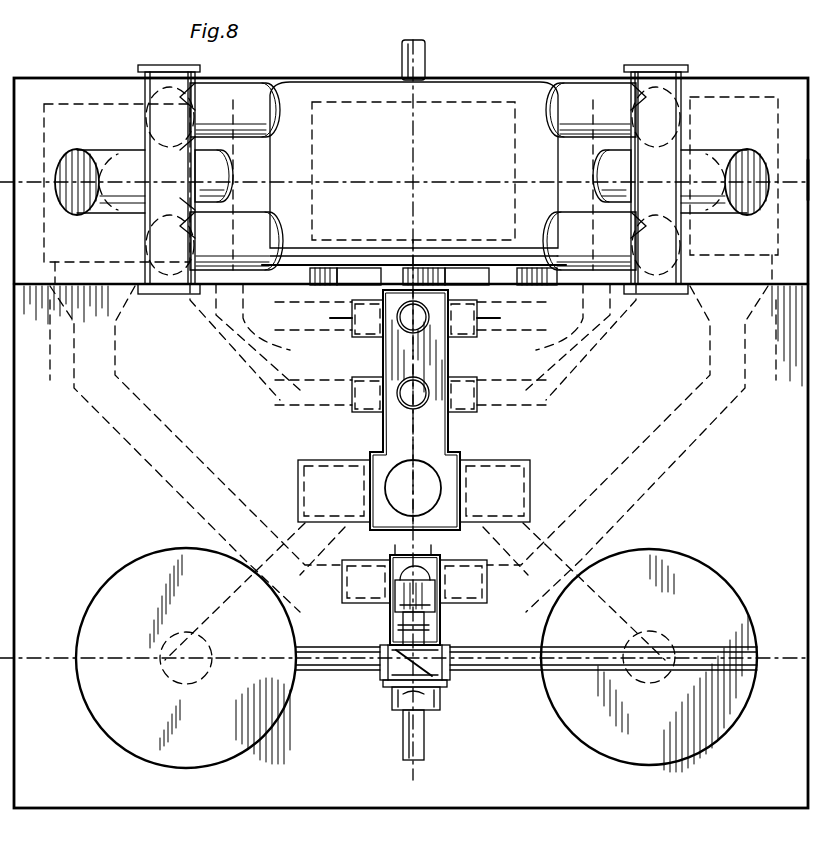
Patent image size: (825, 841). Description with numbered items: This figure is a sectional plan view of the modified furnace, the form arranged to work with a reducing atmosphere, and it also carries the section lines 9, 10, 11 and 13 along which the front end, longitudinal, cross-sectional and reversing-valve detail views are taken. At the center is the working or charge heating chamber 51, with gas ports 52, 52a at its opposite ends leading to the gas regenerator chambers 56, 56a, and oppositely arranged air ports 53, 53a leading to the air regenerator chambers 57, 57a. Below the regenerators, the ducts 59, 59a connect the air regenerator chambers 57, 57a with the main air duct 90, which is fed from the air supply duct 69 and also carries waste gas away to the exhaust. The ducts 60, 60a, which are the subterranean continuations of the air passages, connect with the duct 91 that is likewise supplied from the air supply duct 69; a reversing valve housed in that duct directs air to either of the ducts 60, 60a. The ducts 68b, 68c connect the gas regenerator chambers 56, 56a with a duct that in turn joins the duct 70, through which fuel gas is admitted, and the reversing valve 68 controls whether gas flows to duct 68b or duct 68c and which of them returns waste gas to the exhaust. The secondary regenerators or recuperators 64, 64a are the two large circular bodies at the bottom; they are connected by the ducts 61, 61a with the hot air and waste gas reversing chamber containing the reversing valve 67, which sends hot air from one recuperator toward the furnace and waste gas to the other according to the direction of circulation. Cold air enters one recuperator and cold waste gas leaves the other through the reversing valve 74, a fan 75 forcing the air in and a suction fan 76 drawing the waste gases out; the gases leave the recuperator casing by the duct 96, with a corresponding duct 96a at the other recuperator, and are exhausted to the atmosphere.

The section line 9- 9 is at (778, 656).
The section line 10- 10 is at (413, 36).
The section line 11- 11 is at (798, 179).
The section line 13- 13 is at (540, 300).
The working or charge heating chamber 51 is at (414, 183).
The gas port 52 is at (215, 177).
The gas port 52a is at (607, 172).
The air port 53 is at (243, 96).
The air port 53a is at (583, 96).
The gas regenerator chamber 56 is at (66, 114).
The gas regenerator chamber 56a is at (714, 104).
The air regenerator chamber 57 is at (318, 160).
The air regenerator chamber 57a is at (512, 168).
The duct 59 is at (352, 332).
The duct 59a is at (470, 336).
The duct 60 is at (352, 408).
The duct 60a is at (462, 406).
The duct 61 is at (302, 482).
The duct 61a is at (530, 492).
The secondary regenerator or recuperator 64 is at (186, 658).
The secondary regenerator or recuperator 64a is at (649, 660).
The reversing valve 67 is at (425, 490).
The reversing valve 68 is at (438, 570).
The duct 68b is at (352, 596).
The duct 68c is at (628, 496).
The air supply duct 69 is at (413, 332).
The duct 70 is at (393, 620).
The reversing valve 74 is at (445, 680).
The fan 75 is at (428, 596).
The suction fan 76 is at (395, 702).
The main air duct 90 is at (384, 338).
The duct 91 is at (400, 402).
The duct 96 is at (358, 668).
The axle pipe 96a is at (496, 668).